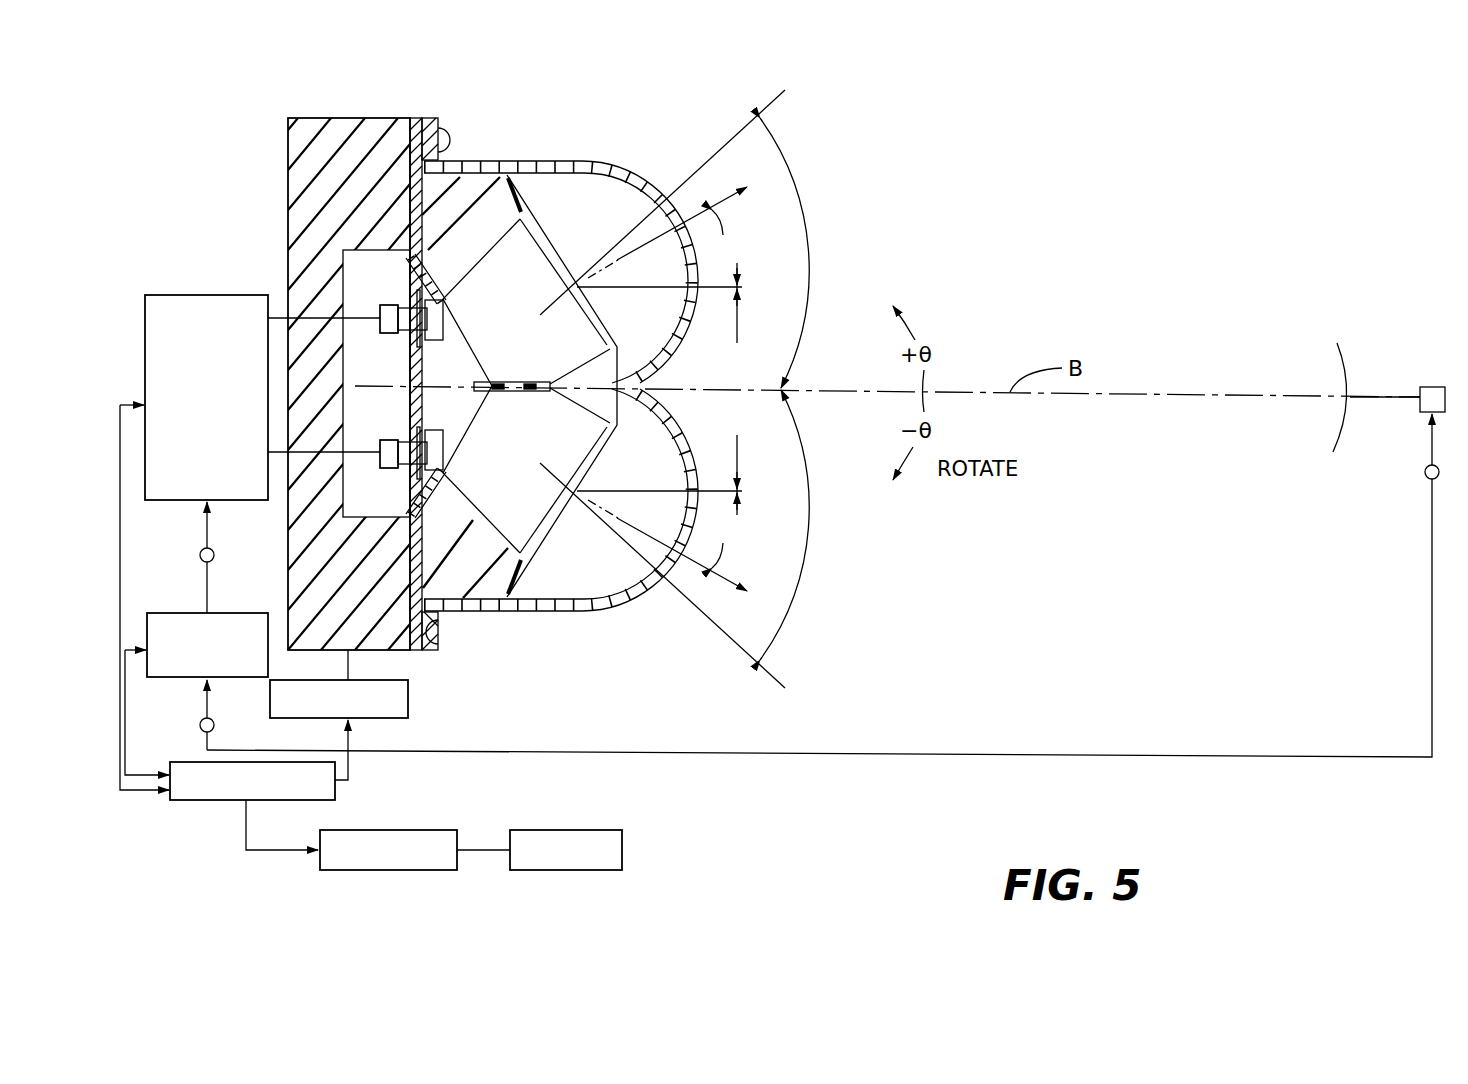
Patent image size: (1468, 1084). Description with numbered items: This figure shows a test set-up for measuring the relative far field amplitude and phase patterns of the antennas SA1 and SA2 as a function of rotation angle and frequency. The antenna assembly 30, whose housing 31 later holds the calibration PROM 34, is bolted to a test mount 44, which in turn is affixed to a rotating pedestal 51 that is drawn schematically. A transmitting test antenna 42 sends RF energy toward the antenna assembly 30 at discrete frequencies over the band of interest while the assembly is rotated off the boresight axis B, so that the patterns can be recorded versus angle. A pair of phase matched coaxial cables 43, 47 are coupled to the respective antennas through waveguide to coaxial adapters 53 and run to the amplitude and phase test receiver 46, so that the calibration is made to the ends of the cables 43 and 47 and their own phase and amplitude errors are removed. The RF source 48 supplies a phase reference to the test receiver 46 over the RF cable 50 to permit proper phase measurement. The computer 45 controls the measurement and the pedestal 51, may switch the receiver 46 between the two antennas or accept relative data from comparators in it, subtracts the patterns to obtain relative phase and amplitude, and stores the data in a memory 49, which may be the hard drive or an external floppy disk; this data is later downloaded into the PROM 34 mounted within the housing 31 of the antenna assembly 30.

The antenna assembly 30 is at (596, 156).
The housing 31 is at (464, 392).
The PROM 34 is at (575, 830).
The transmitting test antenna 42 is at (1355, 335).
The coaxial cable 43 is at (360, 310).
The test mount 44 is at (362, 132).
The computer 45 is at (224, 804).
The amplitude and phase test receiver 46 is at (188, 505).
The coaxial cable 47 is at (360, 436).
The RF source 48 is at (182, 685).
The memory 49 is at (378, 872).
The RF cable 50 is at (215, 550).
The pedestal 51 is at (413, 697).
The waveguide to coaxial adapter 53 is at (398, 333).